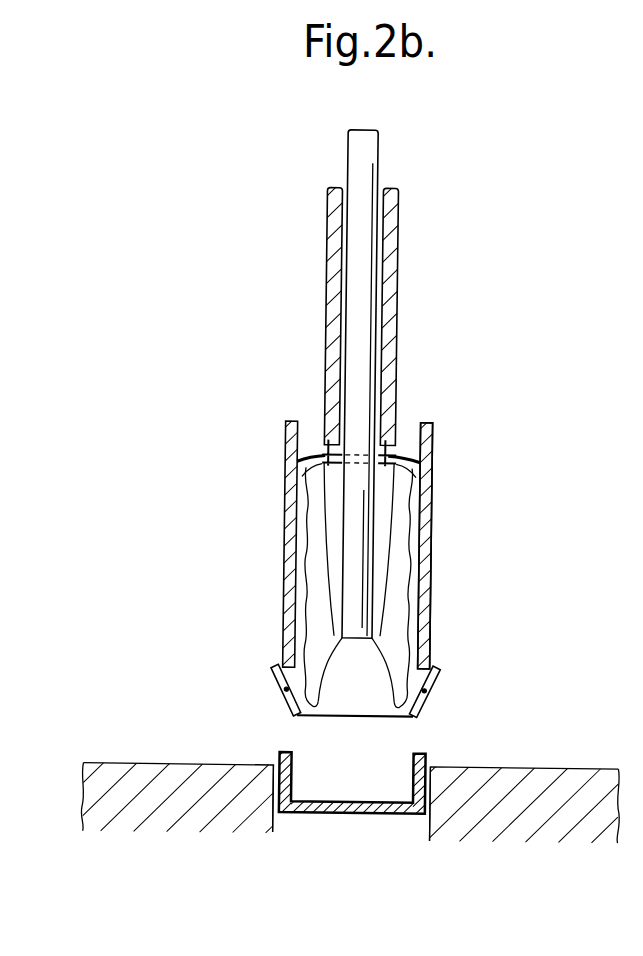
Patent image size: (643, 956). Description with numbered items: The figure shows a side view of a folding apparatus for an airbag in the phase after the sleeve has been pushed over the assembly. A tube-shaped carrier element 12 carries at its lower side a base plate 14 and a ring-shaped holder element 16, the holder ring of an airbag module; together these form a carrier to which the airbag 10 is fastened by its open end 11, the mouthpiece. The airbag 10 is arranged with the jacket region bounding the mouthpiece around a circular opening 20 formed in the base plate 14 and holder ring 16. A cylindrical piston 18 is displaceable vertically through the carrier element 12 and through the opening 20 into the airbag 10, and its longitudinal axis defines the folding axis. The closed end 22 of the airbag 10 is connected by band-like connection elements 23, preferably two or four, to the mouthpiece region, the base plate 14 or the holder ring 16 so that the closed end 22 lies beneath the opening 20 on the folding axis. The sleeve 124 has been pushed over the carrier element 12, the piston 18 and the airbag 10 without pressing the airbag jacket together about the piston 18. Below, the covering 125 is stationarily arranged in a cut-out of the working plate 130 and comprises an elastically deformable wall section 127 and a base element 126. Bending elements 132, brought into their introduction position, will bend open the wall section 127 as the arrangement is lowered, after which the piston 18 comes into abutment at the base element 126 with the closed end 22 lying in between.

The airbag 10 is at (420, 637).
The open end 11 is at (328, 457).
The carrier element 12 is at (390, 262).
The base plate 14 is at (397, 457).
The holder element 16 is at (388, 470).
The piston 18 is at (365, 153).
The opening 20 is at (350, 449).
The closed end 22 is at (357, 641).
The connection elements 23 is at (320, 554).
The sleeve 124 is at (430, 516).
The covering 125 is at (160, 845).
The base element 126 is at (328, 815).
The wall section 127 is at (277, 792).
The working plate 130 is at (555, 787).
The bending elements 132 is at (277, 682).